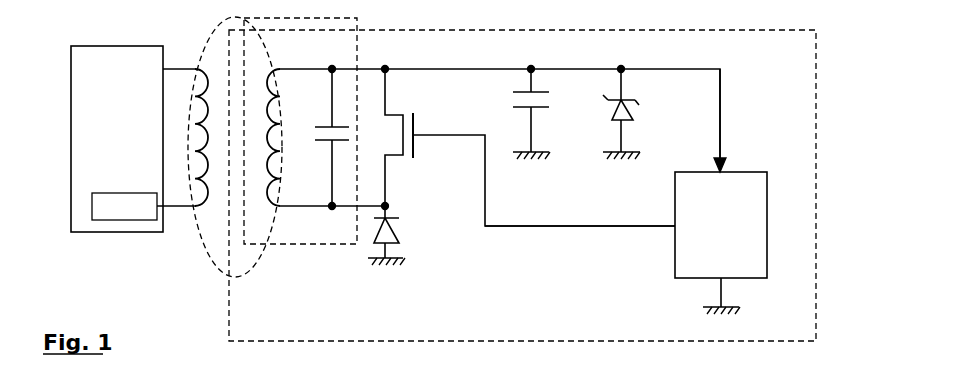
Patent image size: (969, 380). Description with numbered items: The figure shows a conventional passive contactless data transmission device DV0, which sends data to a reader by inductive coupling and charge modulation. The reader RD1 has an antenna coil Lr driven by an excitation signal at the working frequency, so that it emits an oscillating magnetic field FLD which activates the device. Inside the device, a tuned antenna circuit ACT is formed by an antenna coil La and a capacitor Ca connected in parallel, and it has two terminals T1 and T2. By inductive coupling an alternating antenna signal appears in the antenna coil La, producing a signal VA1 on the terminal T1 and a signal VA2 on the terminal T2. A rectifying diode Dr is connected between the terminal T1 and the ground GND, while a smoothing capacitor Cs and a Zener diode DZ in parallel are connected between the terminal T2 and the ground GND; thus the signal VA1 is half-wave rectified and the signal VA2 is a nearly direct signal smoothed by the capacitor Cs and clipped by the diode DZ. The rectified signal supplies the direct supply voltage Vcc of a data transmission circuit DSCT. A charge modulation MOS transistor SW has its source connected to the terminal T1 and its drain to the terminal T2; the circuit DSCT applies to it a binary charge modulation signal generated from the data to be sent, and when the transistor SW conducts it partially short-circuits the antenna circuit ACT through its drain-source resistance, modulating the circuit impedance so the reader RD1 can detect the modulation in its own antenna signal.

The reader RD1 is at (133, 149).
The antenna coil Lr is at (197, 78).
The antenna coil La is at (266, 213).
The magnetic field FLD is at (204, 248).
The contactless data transmission device DV0 is at (285, 336).
The tuned antenna circuit ACT is at (357, 52).
The terminal T1 is at (331, 210).
The terminal T2 is at (356, 37).
The signal VA1 is at (336, 199).
The signal VA2 is at (501, 105).
The capacitor Ca is at (323, 125).
The charge modulation transistor SW is at (415, 143).
The smoothing capacitor Cs is at (524, 106).
The Zener diode DZ is at (630, 114).
The rectifying diode Dr is at (400, 232).
The ground GND is at (430, 253).
The direct supply voltage Vcc is at (733, 120).
The data transmission circuit DSCT is at (745, 235).